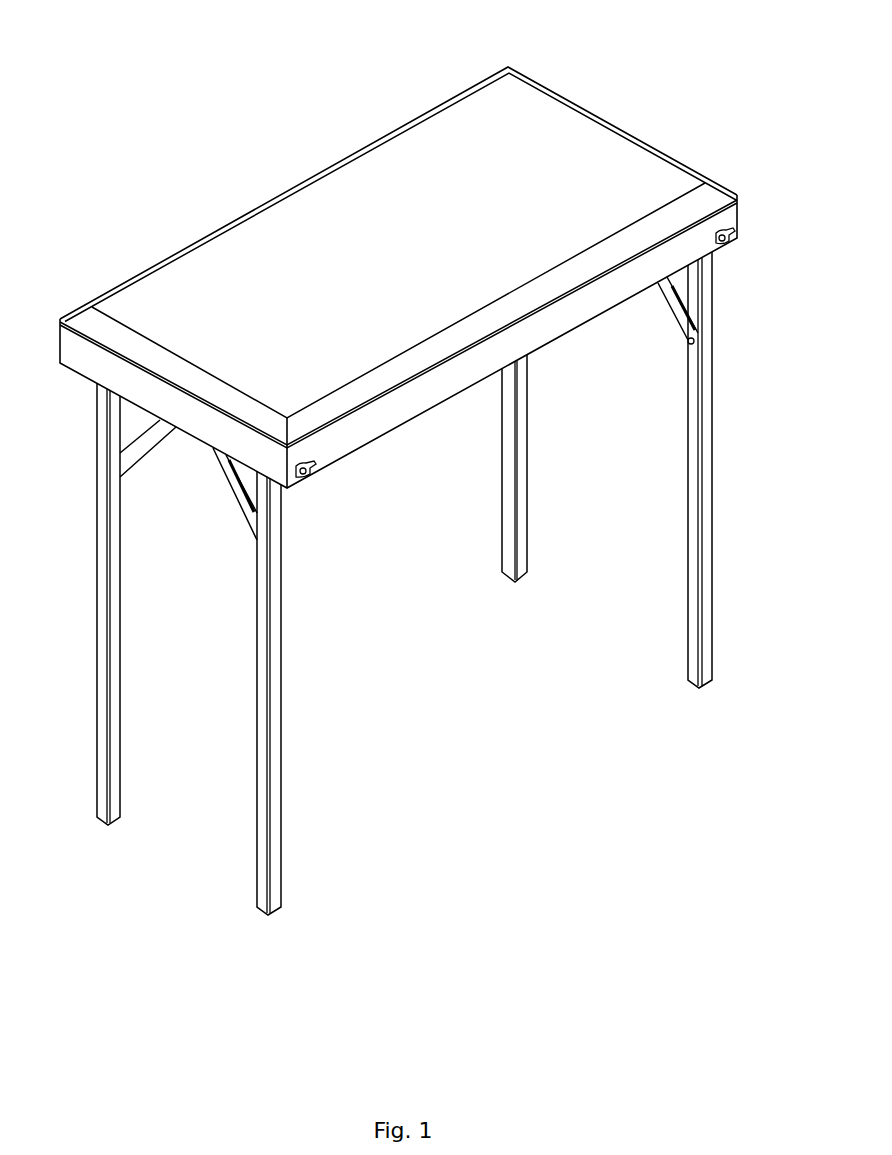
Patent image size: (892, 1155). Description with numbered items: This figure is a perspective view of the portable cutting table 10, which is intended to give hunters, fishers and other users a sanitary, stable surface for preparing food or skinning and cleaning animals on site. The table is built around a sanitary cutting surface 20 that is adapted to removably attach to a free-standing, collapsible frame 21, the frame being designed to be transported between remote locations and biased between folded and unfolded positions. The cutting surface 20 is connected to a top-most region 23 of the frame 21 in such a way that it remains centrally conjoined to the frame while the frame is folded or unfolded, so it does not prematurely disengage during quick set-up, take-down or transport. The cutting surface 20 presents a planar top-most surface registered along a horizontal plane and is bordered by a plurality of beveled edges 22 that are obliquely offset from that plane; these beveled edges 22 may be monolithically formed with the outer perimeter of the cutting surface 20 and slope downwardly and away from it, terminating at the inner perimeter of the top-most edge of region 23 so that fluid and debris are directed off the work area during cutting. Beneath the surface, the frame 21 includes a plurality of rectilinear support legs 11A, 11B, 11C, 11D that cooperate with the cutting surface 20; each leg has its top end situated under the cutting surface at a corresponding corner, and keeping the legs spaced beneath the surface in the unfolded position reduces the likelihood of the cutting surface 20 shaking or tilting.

The portable cutting table 10 is at (298, 148).
The cutting surface 20 is at (401, 245).
The beveled edges 22 is at (124, 300).
The collapsible frame 21 is at (357, 466).
The top-most region 23 is at (428, 385).
The support leg 11A is at (120, 620).
The support leg 11B is at (281, 680).
The support leg 11C is at (527, 428).
The support leg 11D is at (712, 487).